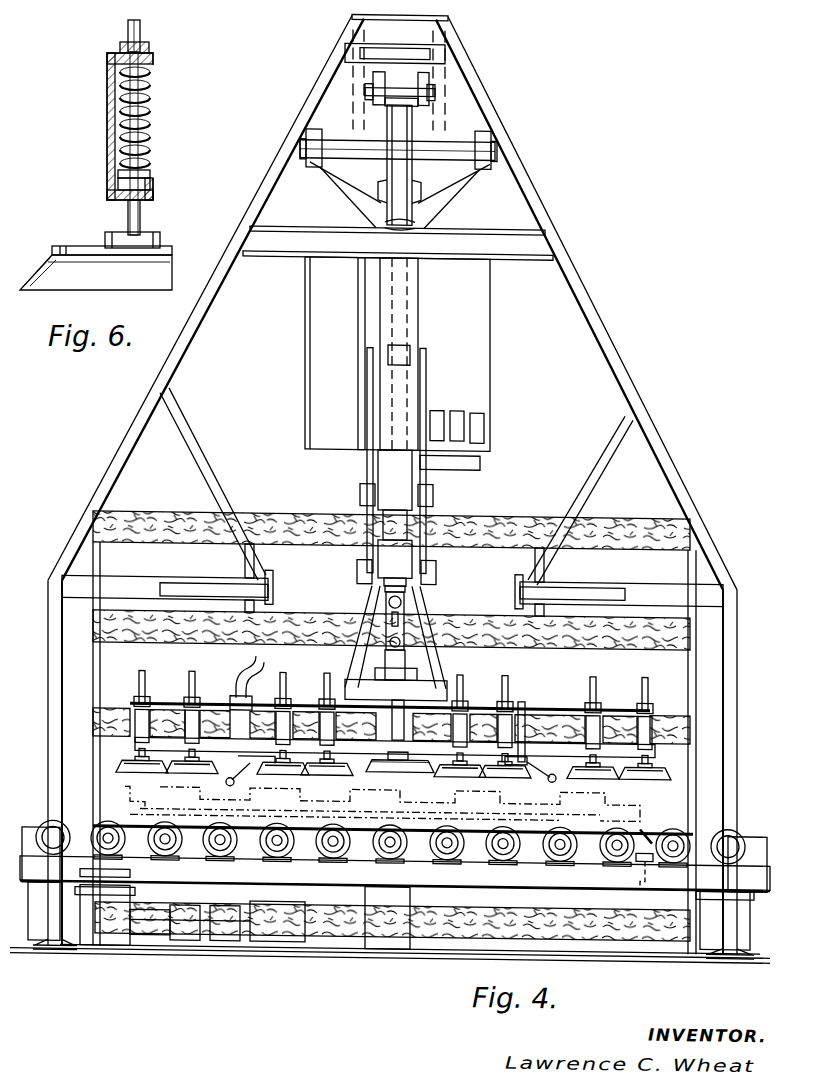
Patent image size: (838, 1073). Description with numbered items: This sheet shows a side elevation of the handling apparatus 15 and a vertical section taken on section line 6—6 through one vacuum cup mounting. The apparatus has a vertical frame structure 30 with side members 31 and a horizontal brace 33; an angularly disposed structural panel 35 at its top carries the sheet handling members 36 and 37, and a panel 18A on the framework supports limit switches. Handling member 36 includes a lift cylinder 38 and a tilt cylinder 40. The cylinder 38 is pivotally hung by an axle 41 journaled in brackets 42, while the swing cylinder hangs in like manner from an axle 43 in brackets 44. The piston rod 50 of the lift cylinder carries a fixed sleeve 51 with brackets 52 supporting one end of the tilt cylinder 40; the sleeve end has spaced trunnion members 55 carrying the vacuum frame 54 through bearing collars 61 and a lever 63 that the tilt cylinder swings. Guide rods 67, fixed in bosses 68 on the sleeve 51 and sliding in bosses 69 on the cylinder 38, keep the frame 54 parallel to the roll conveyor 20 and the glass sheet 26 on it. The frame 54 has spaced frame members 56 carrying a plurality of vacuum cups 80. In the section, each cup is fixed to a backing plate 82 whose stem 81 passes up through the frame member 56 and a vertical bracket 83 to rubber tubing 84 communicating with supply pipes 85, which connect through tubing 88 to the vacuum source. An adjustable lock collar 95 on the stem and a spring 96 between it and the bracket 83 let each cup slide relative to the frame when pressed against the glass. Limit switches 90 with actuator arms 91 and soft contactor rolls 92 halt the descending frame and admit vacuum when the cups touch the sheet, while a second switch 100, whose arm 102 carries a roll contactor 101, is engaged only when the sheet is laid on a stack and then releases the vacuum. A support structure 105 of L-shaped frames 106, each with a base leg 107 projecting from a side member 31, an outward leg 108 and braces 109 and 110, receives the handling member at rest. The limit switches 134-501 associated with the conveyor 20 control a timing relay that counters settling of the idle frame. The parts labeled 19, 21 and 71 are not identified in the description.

In FIG. 4, the section line 6 is at (123, 696).
In FIG. 4, the handling apparatus 15 is at (305, 78).
In FIG. 4, the panel 18A is at (472, 338).
In FIG. 4, the entry roller table 19 is at (30, 826).
In FIG. 4, the roll conveyor 20 is at (357, 868).
In FIG. 4, the exit roller table 21 is at (760, 830).
In FIG. 4, the glass sheet 26 is at (130, 824).
In FIG. 4, the vertical frame structure 30 is at (300, 118).
In FIG. 4, the side member 31 is at (122, 456).
In FIG. 4, the horizontally disposed brace 33 is at (258, 240).
In FIG. 4, the angularly disposed structural panel 35 is at (470, 105).
In FIG. 4, the sheet handling member 36 is at (372, 297).
In FIG. 4, the sheet handling member 37 is at (365, 190).
In FIG. 4, the lift cylinder 38 is at (395, 316).
In FIG. 4, the tilt cylinder 40 is at (398, 612).
In FIG. 4, the axle 41 is at (412, 152).
In FIG. 4, the brackets 42 is at (318, 130).
In FIG. 4, the axle 43 is at (432, 92).
In FIG. 4, the brackets 44 is at (380, 78).
In FIG. 4, the piston rod 50 is at (414, 514).
In FIG. 4, the sleeve 51 is at (384, 584).
In FIG. 4, the brackets 52 is at (406, 582).
In FIG. 4, the vacuum frame 54 is at (125, 752).
In FIG. 4, the trunnion members 55 is at (318, 692).
In FIG. 6, the frame members 56 is at (150, 188).
In FIG. 4, the frame members 56 is at (538, 735).
In FIG. 4, the bearing collars 61 is at (360, 680).
In FIG. 4, the lever 63 is at (395, 668).
In FIG. 4, the guide rods 67 is at (366, 404).
In FIG. 4, the bosses 68 is at (356, 574).
In FIG. 4, the bosses 69 is at (358, 492).
In FIG. 4, the column lower end 71 is at (395, 198).
In FIG. 6, the vacuum cups 80 is at (125, 280).
In FIG. 4, the vacuum cups 80 is at (470, 772).
In FIG. 6, the stem 81 is at (140, 222).
In FIG. 6, the backing plate 82 is at (70, 246).
In FIG. 6, the bracket 83 is at (152, 62).
In FIG. 6, the rubber tubing 84 is at (140, 28).
In FIG. 4, the rubber tubing 84 is at (144, 674).
In FIG. 4, the supply pipes 85 is at (160, 708).
In FIG. 4, the tubing 88 is at (240, 680).
In FIG. 4, the limit switches 90 is at (246, 780).
In FIG. 4, the actuator arm 91 is at (244, 760).
In FIG. 4, the soft contactor roll 92 is at (228, 784).
In FIG. 6, the adjustable lock collar 95 is at (150, 172).
In FIG. 6, the tension spring 96 is at (142, 128).
In FIG. 4, the second switch 100 is at (405, 765).
In FIG. 4, the roll contactor 101 is at (380, 800).
In FIG. 4, the arm 102 is at (410, 778).
In FIG. 4, the support structure 105 is at (262, 570).
In FIG. 4, the L-shaped frames 106 is at (140, 580).
In FIG. 4, the base leg 107 is at (170, 580).
In FIG. 4, the outwardly directed leg 108 is at (265, 584).
In FIG. 4, the brace 109 is at (195, 468).
In FIG. 4, the brace 110 is at (205, 596).
In FIG. 4, the limit switches 134-501 is at (646, 876).